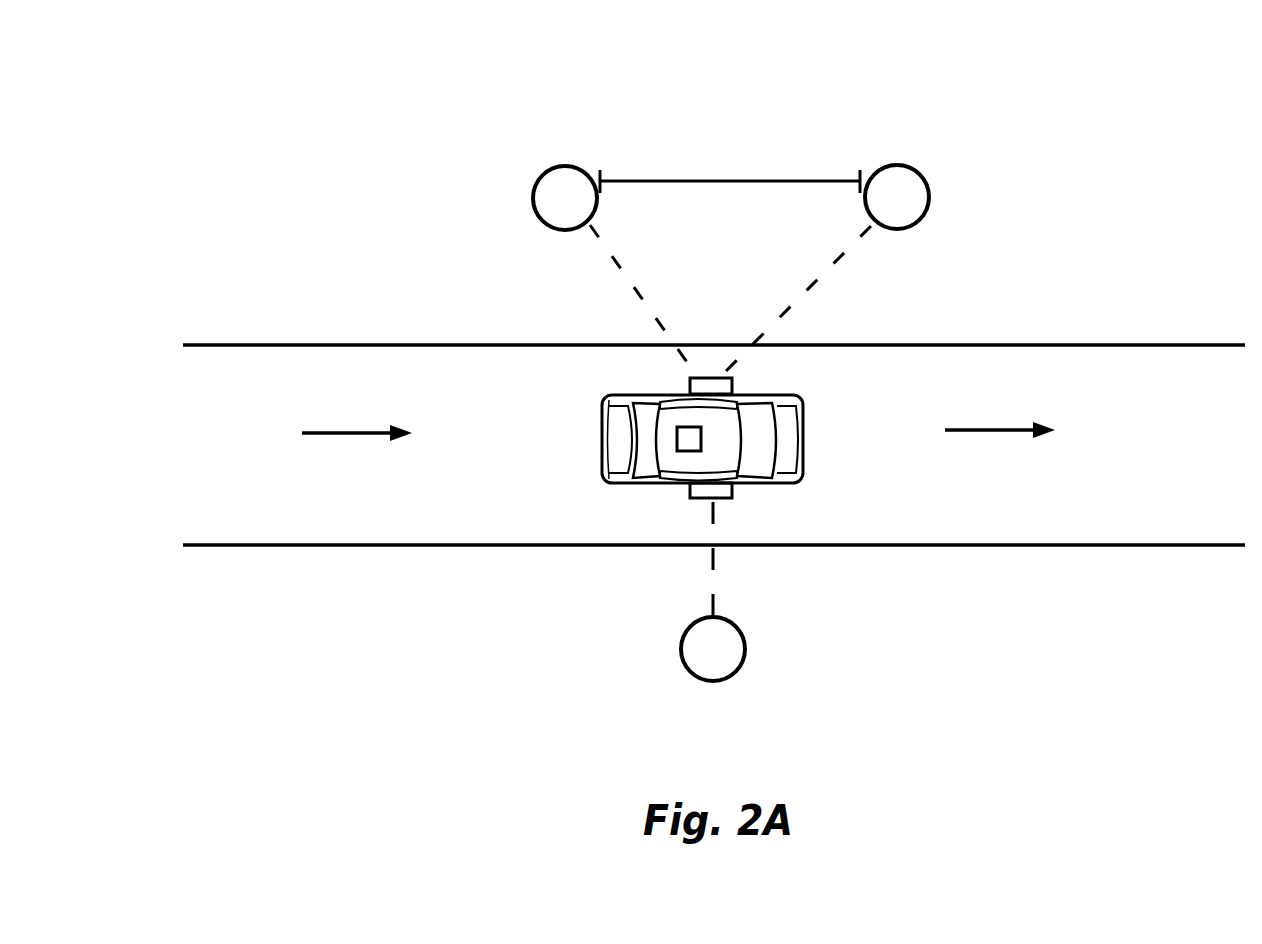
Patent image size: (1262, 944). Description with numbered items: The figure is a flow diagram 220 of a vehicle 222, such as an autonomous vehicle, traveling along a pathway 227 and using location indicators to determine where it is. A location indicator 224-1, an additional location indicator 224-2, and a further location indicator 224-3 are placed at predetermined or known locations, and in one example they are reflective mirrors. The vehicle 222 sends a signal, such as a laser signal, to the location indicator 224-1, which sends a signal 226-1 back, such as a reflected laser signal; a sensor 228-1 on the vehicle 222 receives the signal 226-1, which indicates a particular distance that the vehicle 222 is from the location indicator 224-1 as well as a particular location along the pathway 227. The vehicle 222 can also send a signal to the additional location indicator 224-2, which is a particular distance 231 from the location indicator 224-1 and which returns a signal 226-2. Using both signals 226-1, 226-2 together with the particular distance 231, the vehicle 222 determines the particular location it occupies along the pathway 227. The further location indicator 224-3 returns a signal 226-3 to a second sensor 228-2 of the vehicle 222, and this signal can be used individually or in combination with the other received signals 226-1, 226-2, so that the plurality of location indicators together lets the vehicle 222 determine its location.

The flow diagram 220 is at (172, 74).
The vehicle 222 is at (804, 434).
The location indicator 224-1 is at (583, 167).
The additional location indicator 224-2 is at (931, 197).
The further location indicator 224-3 is at (747, 649).
The signal 226-1 is at (617, 268).
The signal 226-2 is at (797, 294).
The signal 226-3 is at (714, 597).
The pathway 227 is at (524, 330).
The sensor 228-1 is at (733, 378).
The sensor 228-2 is at (733, 493).
The particular distance 231 is at (730, 181).